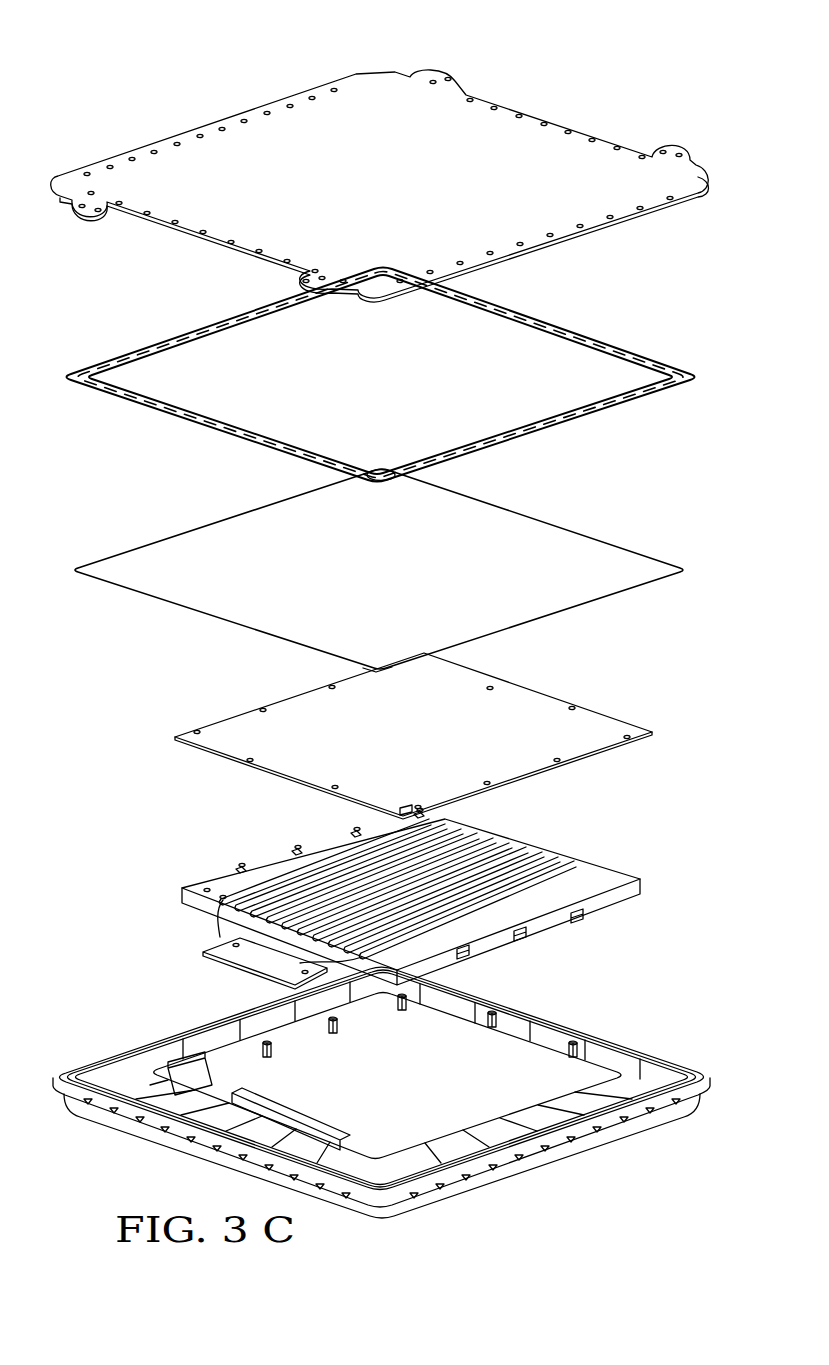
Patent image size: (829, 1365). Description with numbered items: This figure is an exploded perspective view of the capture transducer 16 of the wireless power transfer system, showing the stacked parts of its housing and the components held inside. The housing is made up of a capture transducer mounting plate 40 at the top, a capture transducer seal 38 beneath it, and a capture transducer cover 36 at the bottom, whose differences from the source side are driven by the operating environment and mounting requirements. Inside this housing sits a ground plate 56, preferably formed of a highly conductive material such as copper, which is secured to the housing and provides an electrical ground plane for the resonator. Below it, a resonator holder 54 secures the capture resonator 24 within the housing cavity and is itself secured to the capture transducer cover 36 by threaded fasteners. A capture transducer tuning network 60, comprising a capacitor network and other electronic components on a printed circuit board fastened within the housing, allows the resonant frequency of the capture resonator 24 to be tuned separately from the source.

The capture transducer 16 is at (590, 58).
The capture transducer mounting plate 40 is at (665, 175).
The capture transducer seal 38 is at (660, 358).
The ground plate 56 is at (620, 558).
The resonator holder 54 is at (607, 730).
The capture resonator 24 is at (595, 880).
The capture transducer tuning network 60 is at (223, 950).
The capture transducer cover 36 is at (640, 1055).